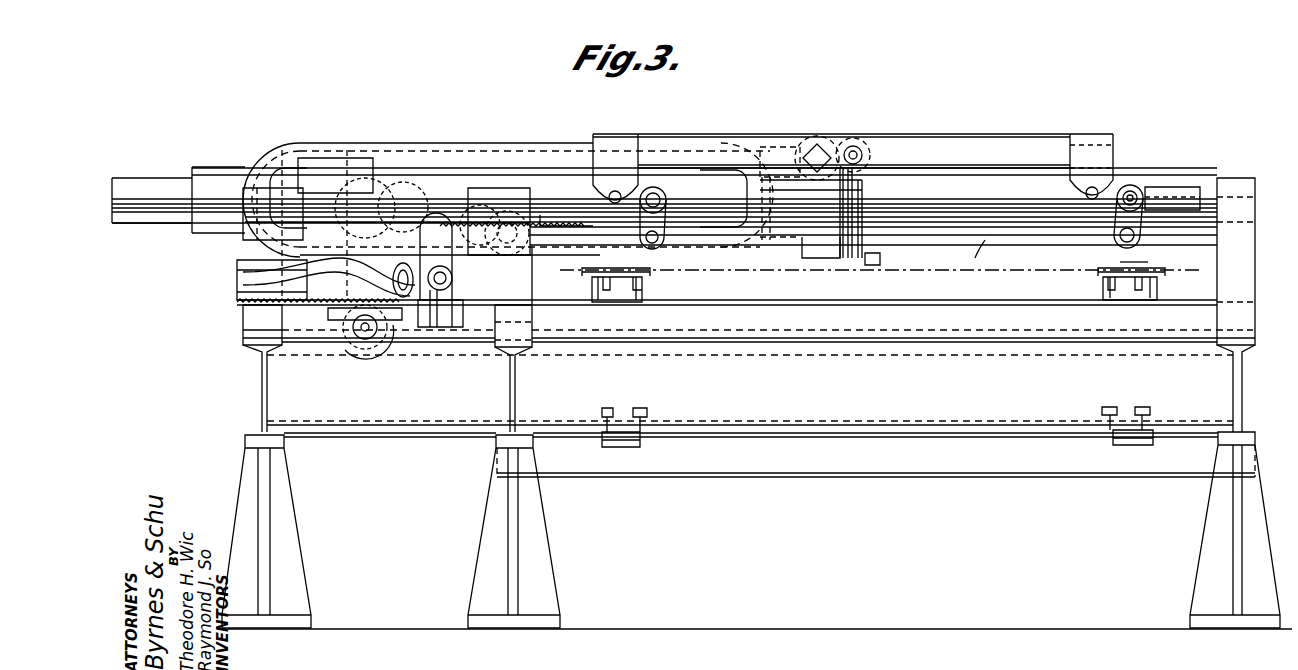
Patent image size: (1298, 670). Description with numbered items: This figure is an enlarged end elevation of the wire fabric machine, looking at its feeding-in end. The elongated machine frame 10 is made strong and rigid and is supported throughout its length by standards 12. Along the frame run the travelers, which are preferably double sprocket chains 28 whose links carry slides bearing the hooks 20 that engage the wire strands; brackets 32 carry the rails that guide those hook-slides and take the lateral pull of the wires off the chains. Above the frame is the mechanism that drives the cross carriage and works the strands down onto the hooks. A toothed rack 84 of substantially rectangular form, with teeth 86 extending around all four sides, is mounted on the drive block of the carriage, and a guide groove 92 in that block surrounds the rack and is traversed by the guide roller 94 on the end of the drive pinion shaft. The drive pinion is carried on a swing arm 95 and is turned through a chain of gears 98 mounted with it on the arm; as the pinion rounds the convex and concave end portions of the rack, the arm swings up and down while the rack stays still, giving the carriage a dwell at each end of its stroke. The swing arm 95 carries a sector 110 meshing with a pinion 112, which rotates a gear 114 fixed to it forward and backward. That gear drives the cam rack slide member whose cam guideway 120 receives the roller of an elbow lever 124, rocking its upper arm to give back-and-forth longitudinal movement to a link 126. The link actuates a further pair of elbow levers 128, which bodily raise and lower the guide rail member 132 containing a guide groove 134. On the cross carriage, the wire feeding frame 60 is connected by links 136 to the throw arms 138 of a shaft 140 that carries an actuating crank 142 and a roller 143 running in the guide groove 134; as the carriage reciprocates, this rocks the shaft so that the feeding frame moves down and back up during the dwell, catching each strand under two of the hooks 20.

The machine frame 10 is at (1248, 395).
The standards 12 is at (290, 525).
The hooks 20 is at (642, 272).
The sprocket chains 28 is at (642, 290).
The brackets 32 is at (1140, 268).
The wire feeding frame 60 is at (878, 258).
The toothed rack 84 is at (570, 215).
The teeth 86 is at (600, 205).
The guide groove 92 is at (724, 152).
The guide roller 94 is at (535, 252).
The swing arm 95 is at (430, 185).
The chain of gears 98 is at (372, 185).
The sector 110 is at (312, 305).
The pinion 112 is at (372, 340).
The gear 114 is at (392, 340).
The cam guideway 120 is at (243, 272).
The elbow lever 124 is at (452, 270).
The link 126 is at (994, 254).
The elbow levers 128 is at (1140, 228).
The guide rail member 132 is at (1037, 136).
The guide groove 134 is at (1097, 150).
The links 136 is at (858, 190).
The throw arms 138 is at (853, 140).
The shaft 140 is at (820, 138).
The actuating crank 142 is at (856, 146).
The roller 143 is at (866, 148).